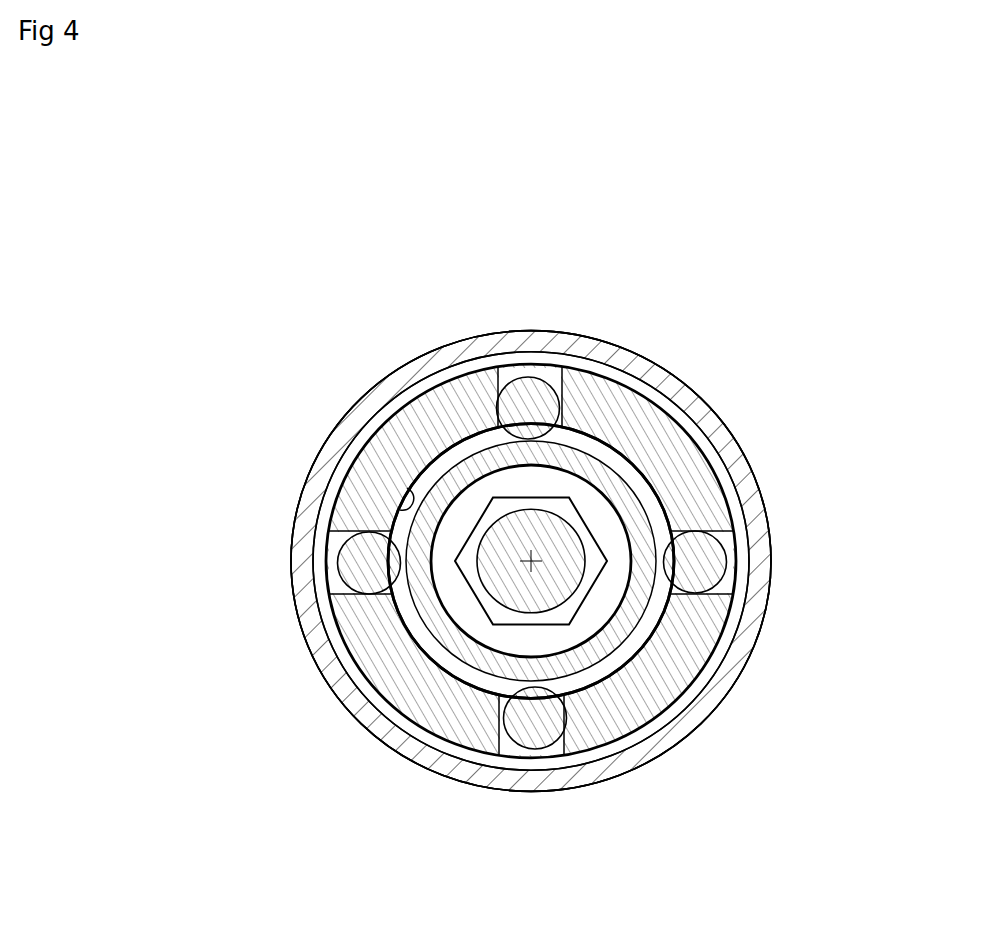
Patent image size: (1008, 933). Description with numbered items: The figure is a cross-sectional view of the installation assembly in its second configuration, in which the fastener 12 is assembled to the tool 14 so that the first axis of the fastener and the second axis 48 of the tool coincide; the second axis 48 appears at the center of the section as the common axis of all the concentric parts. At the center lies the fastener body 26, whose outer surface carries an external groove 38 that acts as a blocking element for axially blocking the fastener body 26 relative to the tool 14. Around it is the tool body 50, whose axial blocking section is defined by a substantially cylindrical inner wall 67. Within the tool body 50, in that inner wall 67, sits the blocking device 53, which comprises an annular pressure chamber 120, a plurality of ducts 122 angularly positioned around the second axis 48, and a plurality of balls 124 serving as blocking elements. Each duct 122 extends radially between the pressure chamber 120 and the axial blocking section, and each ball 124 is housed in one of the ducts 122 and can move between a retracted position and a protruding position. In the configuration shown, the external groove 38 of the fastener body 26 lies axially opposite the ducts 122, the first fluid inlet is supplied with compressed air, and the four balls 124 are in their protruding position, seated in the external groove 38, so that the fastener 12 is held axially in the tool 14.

The fastener 12 is at (405, 453).
The tool 14 is at (272, 409).
The fastener body 26 is at (460, 647).
The external groove 38 is at (395, 644).
The second axis 48 is at (533, 560).
The tool body 50 is at (710, 391).
The blocking device 53 is at (818, 742).
The inner wall 67 is at (400, 510).
The pressure chamber 120 is at (550, 768).
The duct 122 is at (703, 557).
The ball 124 is at (738, 562).